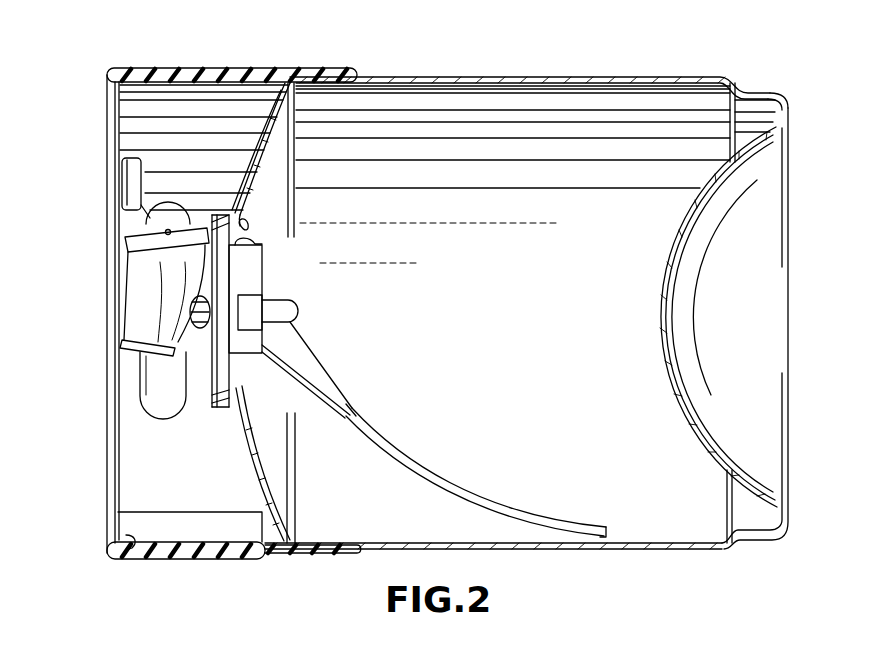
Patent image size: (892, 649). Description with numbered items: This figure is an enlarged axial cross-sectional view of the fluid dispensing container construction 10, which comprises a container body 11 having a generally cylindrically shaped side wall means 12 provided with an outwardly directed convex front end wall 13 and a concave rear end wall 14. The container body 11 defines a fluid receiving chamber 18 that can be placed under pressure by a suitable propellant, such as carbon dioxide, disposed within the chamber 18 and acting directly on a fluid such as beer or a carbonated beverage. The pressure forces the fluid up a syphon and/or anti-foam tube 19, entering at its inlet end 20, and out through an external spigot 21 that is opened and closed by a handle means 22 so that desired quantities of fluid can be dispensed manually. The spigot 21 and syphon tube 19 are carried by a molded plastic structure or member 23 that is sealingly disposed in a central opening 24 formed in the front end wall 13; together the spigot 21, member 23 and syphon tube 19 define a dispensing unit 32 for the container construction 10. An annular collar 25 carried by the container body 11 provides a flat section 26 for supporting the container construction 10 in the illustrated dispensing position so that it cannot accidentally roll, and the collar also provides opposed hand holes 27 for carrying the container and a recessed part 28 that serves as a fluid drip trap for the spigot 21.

The fluid dispensing container construction 10 is at (704, 67).
The container body 11 is at (438, 77).
The side wall means 12 is at (516, 549).
The front end wall 13 is at (270, 125).
The rear end wall 14 is at (790, 102).
The fluid receiving chamber 18 is at (505, 116).
The syphon tube 19 is at (404, 456).
The inlet end 20 is at (604, 530).
The spigot 21 is at (136, 305).
The handle means 22 is at (120, 183).
The molded plastic member 23 is at (255, 278).
The central opening 24 is at (238, 256).
The annular collar 25 is at (162, 68).
The flat section 26 is at (198, 562).
The hand holes 27 is at (140, 393).
The recessed part 28 is at (165, 541).
The dispensing unit 32 is at (120, 278).